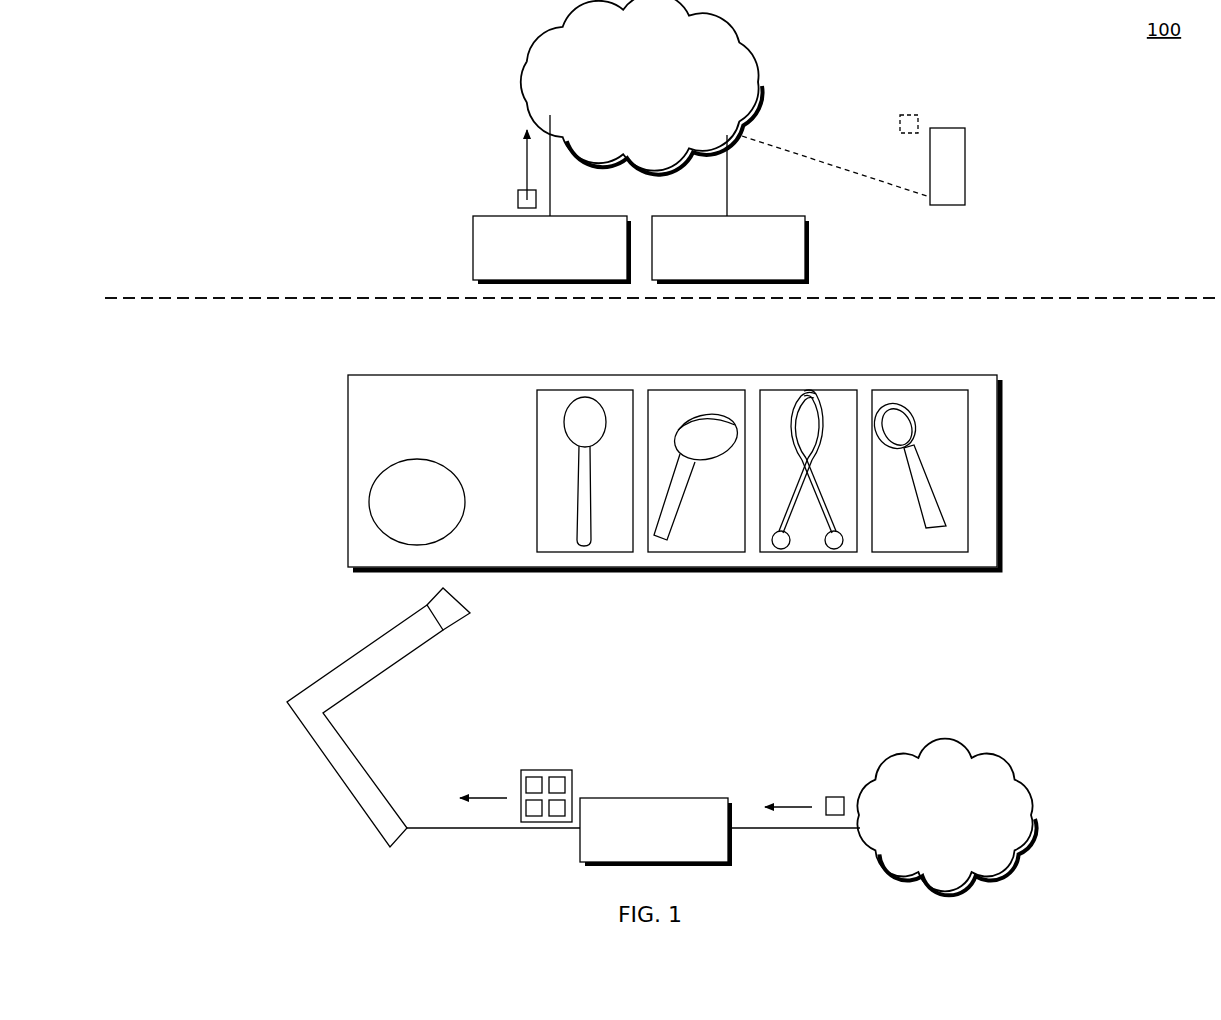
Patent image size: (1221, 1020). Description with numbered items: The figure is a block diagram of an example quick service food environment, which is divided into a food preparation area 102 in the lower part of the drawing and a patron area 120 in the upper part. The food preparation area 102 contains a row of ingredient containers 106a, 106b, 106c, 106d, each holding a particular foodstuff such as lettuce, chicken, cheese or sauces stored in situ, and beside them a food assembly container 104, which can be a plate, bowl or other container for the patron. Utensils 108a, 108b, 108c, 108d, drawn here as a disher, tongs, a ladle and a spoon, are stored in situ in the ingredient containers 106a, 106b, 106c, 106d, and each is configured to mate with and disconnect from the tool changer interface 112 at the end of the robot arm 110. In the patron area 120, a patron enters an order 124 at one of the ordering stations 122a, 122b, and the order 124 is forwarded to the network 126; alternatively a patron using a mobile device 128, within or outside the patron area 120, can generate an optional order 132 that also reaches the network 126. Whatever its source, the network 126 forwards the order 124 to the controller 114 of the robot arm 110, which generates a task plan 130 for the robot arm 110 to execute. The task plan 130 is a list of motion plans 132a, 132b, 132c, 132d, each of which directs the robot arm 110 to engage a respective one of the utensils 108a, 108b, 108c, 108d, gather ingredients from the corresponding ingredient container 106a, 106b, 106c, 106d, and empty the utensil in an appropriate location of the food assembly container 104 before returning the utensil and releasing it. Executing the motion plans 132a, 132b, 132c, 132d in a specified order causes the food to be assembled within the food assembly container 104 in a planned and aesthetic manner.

The food preparation area 102 is at (348, 430).
The food assembly container 104 is at (382, 500).
The ingredient container 106a is at (968, 494).
The ingredient container 106b is at (830, 553).
The ingredient container 106c is at (718, 553).
The ingredient container 106d is at (608, 553).
The utensil 108a is at (915, 422).
The utensil 108b is at (818, 408).
The utensil 108c is at (714, 430).
The utensil 108d is at (600, 412).
The robot arm 110 is at (323, 760).
The tool changer interface 112 is at (440, 600).
The controller 114 is at (633, 831).
The patron area 120 is at (663, 223).
The ordering station 122a is at (473, 250).
The ordering station 122b is at (808, 252).
The order 124 is at (518, 198).
The network 126 is at (779, 447).
The mobile device 128 is at (967, 160).
The task plan 130 is at (522, 780).
The optional order 132 is at (908, 114).
The motion plan 132a is at (536, 776).
The motion plan 132b is at (565, 785).
The motion plan 132c is at (565, 808).
The motion plan 132d is at (523, 808).